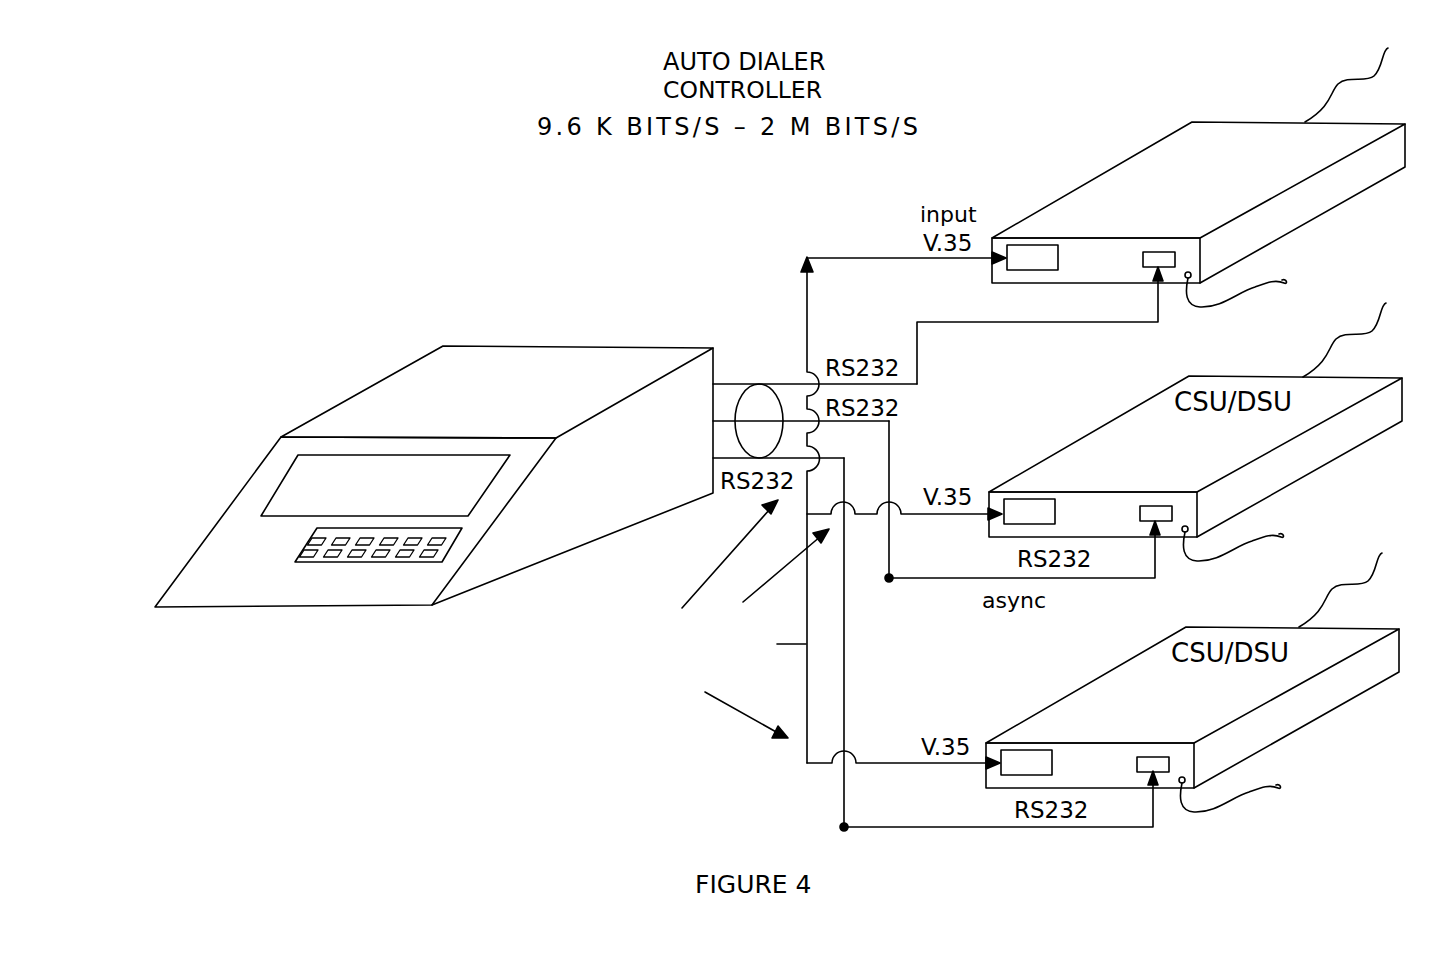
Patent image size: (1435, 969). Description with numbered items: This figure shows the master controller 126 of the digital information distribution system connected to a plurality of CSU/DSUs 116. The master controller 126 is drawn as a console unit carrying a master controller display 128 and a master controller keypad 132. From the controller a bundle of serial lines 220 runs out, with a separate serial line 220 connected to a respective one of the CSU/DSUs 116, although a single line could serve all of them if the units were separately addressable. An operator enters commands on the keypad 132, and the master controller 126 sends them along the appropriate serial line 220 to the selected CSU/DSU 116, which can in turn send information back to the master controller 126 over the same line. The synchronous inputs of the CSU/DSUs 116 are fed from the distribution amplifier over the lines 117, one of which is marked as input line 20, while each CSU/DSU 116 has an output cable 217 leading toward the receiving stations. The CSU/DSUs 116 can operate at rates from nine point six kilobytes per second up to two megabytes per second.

The V.35 input line 20 is at (875, 255).
The CSU/DSU 116 is at (1041, 122).
The lines 117 is at (714, 619).
The master controller 126 is at (578, 345).
The master controller display 128 is at (368, 515).
The master controller keypad 132 is at (368, 562).
The output cables 217 is at (1339, 82).
The RS-232 lines 220 is at (770, 383).